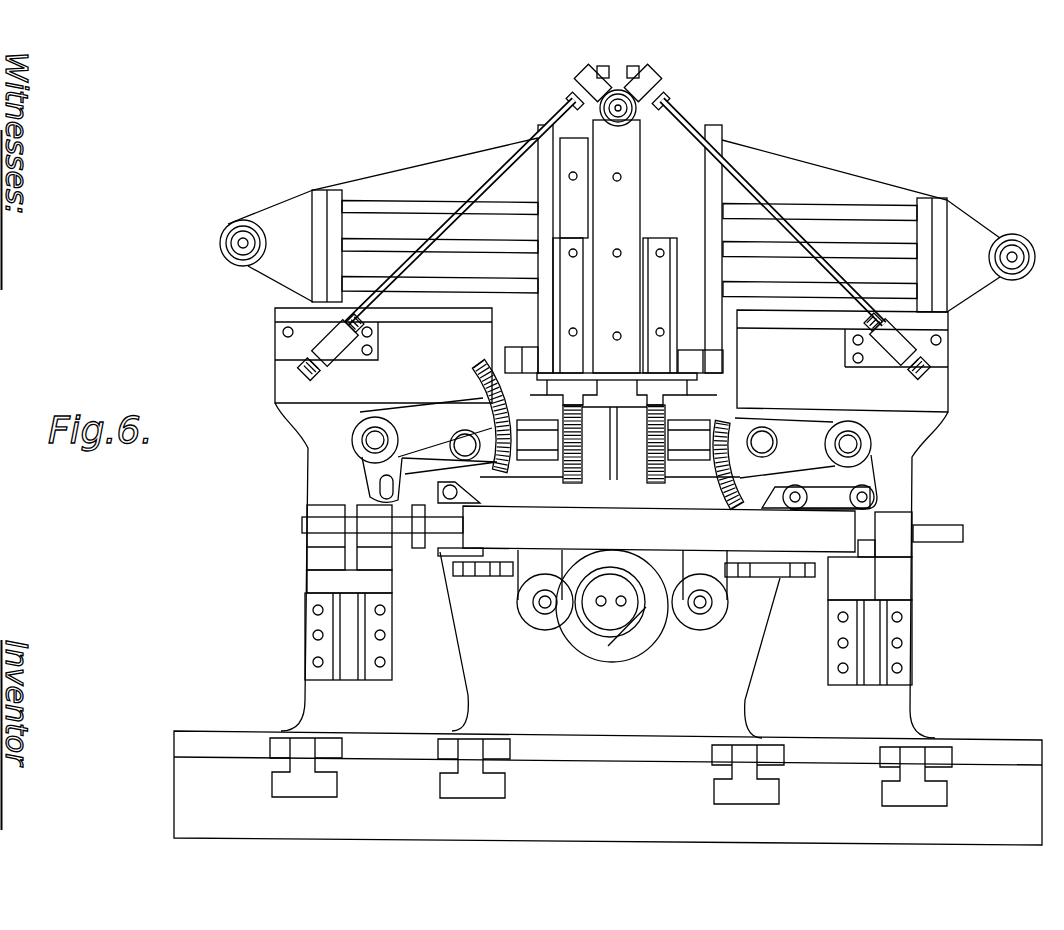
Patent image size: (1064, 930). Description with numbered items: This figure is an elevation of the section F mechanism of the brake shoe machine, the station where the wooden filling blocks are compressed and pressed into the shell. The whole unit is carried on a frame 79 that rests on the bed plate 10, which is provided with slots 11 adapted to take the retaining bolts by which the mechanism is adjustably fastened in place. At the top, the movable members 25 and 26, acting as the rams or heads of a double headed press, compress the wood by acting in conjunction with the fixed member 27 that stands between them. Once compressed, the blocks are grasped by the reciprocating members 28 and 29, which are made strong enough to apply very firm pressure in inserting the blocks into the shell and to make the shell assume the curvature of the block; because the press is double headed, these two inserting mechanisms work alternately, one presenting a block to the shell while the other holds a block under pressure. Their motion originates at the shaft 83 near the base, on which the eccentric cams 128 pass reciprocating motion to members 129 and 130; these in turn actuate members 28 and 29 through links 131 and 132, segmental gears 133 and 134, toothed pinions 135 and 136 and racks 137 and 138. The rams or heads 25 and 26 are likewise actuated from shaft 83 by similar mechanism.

The bed plate 10 is at (207, 787).
The slots 11 is at (463, 782).
The movable member 25 is at (405, 180).
The movable member 26 is at (840, 188).
The fixed member 27 is at (616, 246).
The reciprocating member 28 is at (572, 268).
The reciprocating member 29 is at (655, 248).
The frame 79 is at (333, 437).
The shaft 83 is at (613, 612).
The eccentric cams 128 is at (610, 647).
The member 129 is at (720, 575).
The member 130 is at (540, 568).
The link 131 is at (420, 490).
The link 132 is at (832, 495).
The segmental gear 133 is at (455, 438).
The segmental gear 134 is at (808, 469).
The toothed pinion 135 is at (575, 453).
The toothed pinion 136 is at (662, 453).
The rack 137 is at (570, 395).
The rack 138 is at (667, 395).